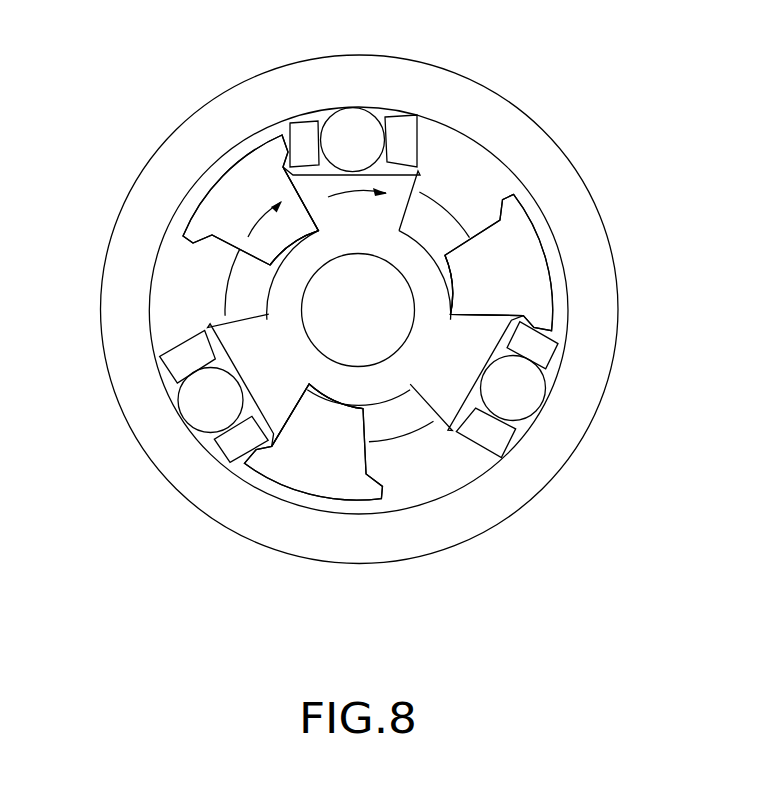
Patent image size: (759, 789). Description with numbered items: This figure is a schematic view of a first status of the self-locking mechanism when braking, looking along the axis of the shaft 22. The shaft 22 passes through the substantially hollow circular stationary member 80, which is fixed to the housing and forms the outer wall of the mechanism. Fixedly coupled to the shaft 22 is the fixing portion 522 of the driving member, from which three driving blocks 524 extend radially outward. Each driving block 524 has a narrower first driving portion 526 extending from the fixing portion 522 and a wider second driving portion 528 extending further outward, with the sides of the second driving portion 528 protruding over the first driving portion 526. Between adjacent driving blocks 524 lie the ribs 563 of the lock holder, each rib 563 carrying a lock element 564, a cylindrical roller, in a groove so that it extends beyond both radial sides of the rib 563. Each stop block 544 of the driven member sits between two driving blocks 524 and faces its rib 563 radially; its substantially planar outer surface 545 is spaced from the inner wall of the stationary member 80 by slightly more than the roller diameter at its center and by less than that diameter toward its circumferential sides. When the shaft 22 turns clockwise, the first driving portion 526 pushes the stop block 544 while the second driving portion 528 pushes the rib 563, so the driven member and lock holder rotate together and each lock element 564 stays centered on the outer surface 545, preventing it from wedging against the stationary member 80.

The shaft 22 is at (358, 342).
The stationary member 80 is at (128, 296).
The fixing portion 522 is at (398, 418).
The driving block 524 is at (140, 50).
The first driving portion 526 is at (275, 185).
The second driving portion 528 is at (212, 208).
The stop block 544 is at (383, 217).
The outer surface 545 is at (425, 165).
The rib 563 is at (305, 140).
The lock element 564 is at (357, 137).